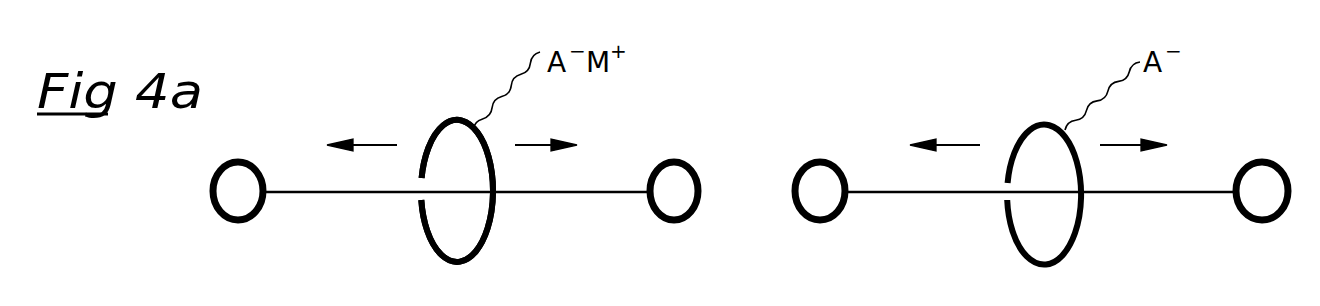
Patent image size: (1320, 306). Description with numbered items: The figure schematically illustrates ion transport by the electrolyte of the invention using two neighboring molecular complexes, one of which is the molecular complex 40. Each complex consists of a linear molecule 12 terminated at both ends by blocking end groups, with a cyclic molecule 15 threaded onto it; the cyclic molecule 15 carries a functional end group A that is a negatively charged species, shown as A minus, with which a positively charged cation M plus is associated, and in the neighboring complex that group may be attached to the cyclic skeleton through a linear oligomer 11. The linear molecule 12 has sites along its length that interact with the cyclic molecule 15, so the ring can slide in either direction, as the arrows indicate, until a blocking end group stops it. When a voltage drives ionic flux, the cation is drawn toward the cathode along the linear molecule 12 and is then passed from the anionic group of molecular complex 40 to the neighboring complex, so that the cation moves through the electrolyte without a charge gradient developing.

The linear oligomer 11 is at (1027, 101).
The linear molecule 12 is at (330, 195).
The cyclic molecule 15 is at (442, 278).
The molecular complex 40 is at (427, 98).